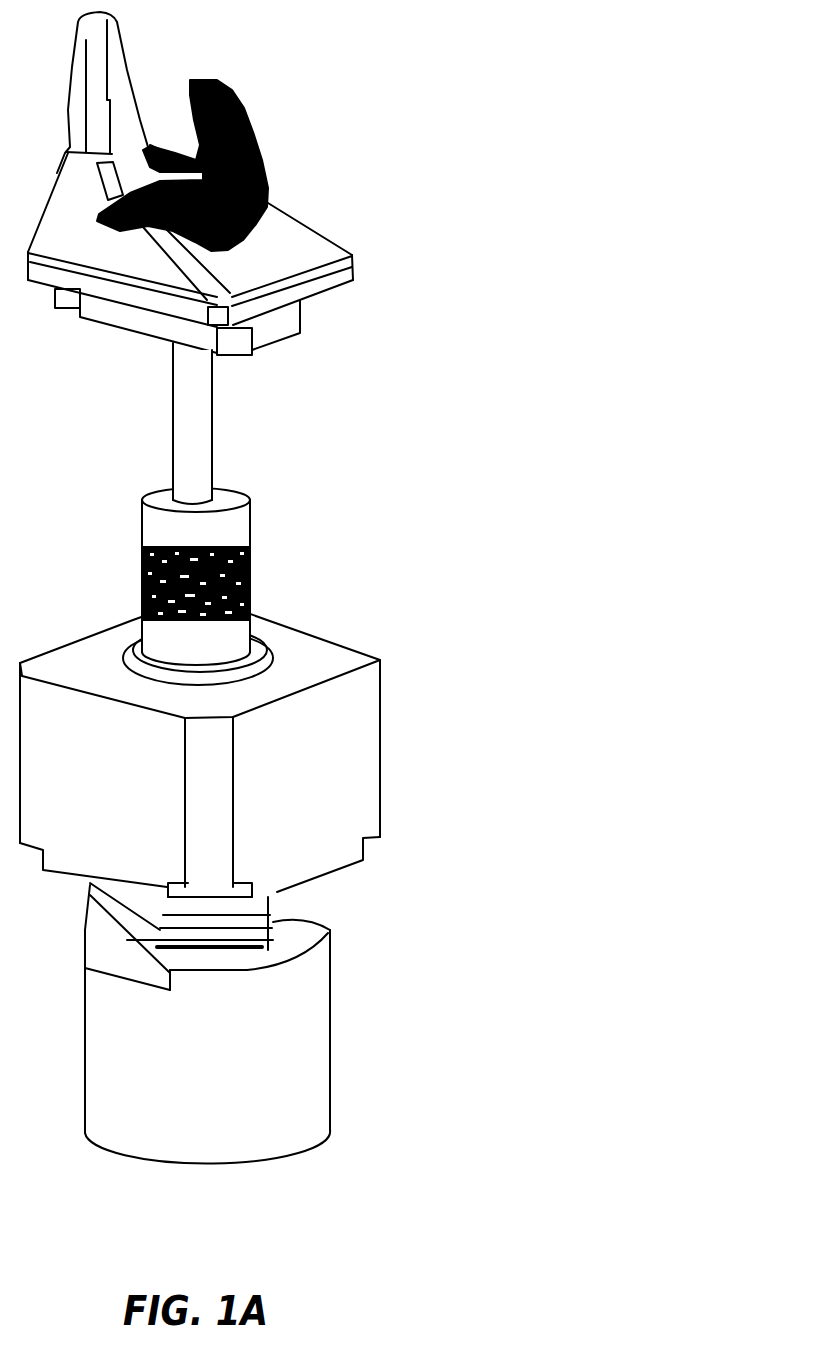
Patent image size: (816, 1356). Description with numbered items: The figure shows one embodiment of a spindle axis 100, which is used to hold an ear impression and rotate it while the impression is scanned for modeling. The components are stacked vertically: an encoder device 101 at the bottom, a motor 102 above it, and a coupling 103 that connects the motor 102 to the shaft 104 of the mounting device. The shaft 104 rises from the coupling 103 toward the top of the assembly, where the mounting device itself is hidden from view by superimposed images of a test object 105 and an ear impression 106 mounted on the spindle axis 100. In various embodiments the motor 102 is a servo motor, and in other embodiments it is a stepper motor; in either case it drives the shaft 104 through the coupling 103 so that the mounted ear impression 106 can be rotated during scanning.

The spindle axis 100 is at (421, 81).
The encoder device 101 is at (293, 1038).
The motor 102 is at (343, 771).
The coupling 103 is at (250, 568).
The shaft 104 is at (193, 429).
The test object 105 is at (233, 272).
The ear impression 106 is at (268, 168).